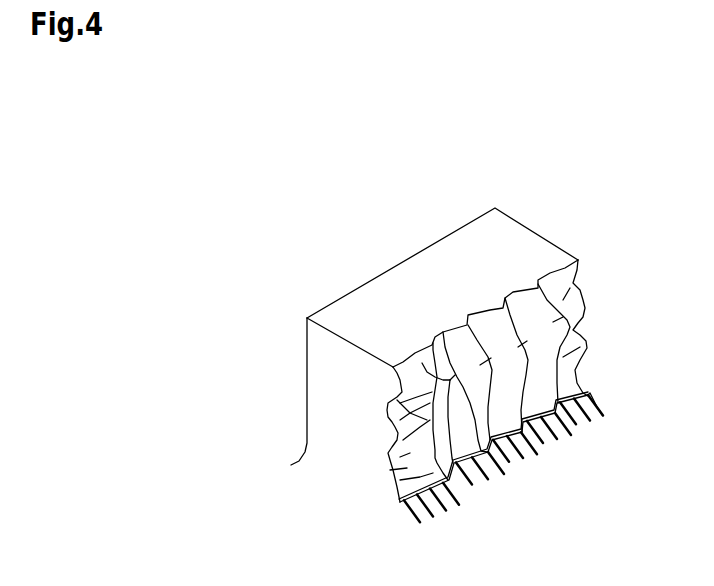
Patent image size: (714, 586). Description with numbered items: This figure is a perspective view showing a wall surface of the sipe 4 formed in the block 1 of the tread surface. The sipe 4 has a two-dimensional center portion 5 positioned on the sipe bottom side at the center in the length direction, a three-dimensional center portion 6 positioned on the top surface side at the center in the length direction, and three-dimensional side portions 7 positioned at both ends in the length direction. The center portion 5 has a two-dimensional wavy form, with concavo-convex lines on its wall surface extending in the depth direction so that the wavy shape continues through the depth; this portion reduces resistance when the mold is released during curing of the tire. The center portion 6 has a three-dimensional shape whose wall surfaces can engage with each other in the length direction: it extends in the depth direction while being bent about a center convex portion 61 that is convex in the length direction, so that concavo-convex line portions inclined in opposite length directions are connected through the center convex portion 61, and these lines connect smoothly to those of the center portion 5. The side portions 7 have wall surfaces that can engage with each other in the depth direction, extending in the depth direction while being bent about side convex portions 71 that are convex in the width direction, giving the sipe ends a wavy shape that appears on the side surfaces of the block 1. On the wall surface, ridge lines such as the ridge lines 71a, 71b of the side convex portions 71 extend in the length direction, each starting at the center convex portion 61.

The block 1 is at (442, 222).
The sipe 4 is at (434, 321).
The 2D center portion 5 is at (501, 466).
The 3D center portion 6 is at (542, 290).
The center convex portion 61 is at (556, 447).
The 3D side portion 7 is at (452, 380).
The side convex portion 71 is at (445, 386).
The ridge line 71a is at (375, 318).
The ridge line 71b is at (318, 435).